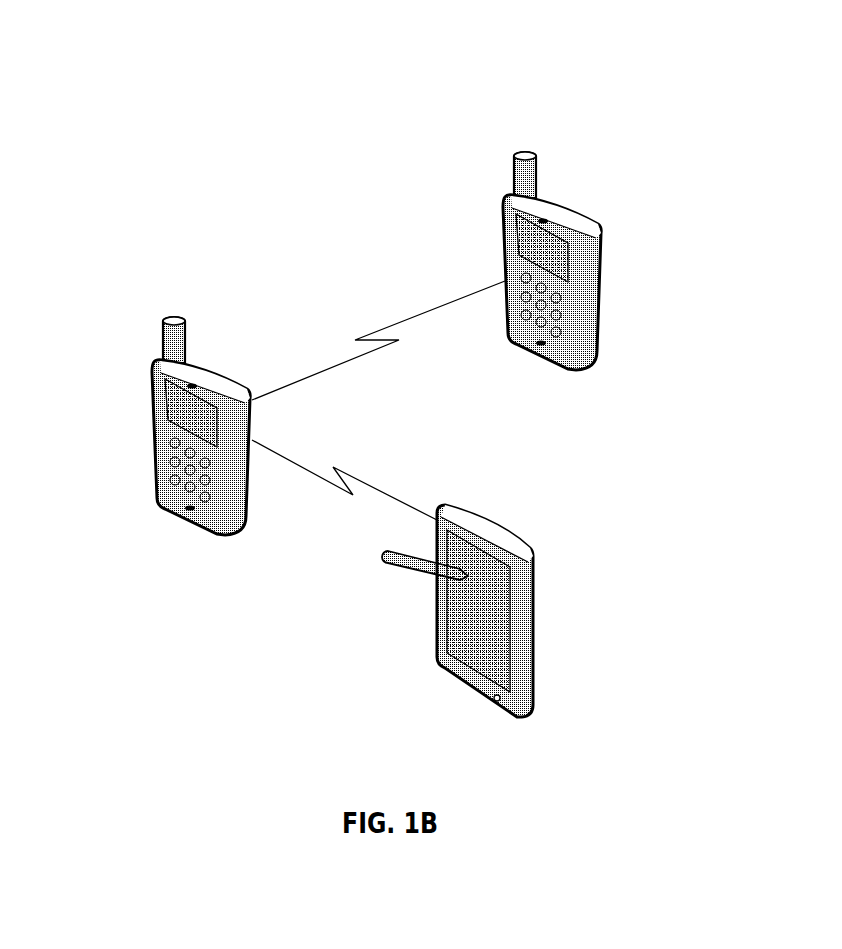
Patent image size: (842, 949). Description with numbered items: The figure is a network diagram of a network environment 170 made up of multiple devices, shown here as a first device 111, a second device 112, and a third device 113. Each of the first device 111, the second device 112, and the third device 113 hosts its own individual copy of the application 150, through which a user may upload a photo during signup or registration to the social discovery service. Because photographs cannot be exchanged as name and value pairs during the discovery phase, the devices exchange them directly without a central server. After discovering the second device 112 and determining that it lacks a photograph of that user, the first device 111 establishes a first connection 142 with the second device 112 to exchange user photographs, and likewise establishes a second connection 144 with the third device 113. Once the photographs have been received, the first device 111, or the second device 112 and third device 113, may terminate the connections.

The first device 111 is at (158, 505).
The second device 112 is at (590, 363).
The third device 113 is at (535, 560).
The first connection 142 is at (457, 298).
The second connection 144 is at (327, 485).
The application 150 is at (198, 423).
The network environment 170 is at (678, 48).